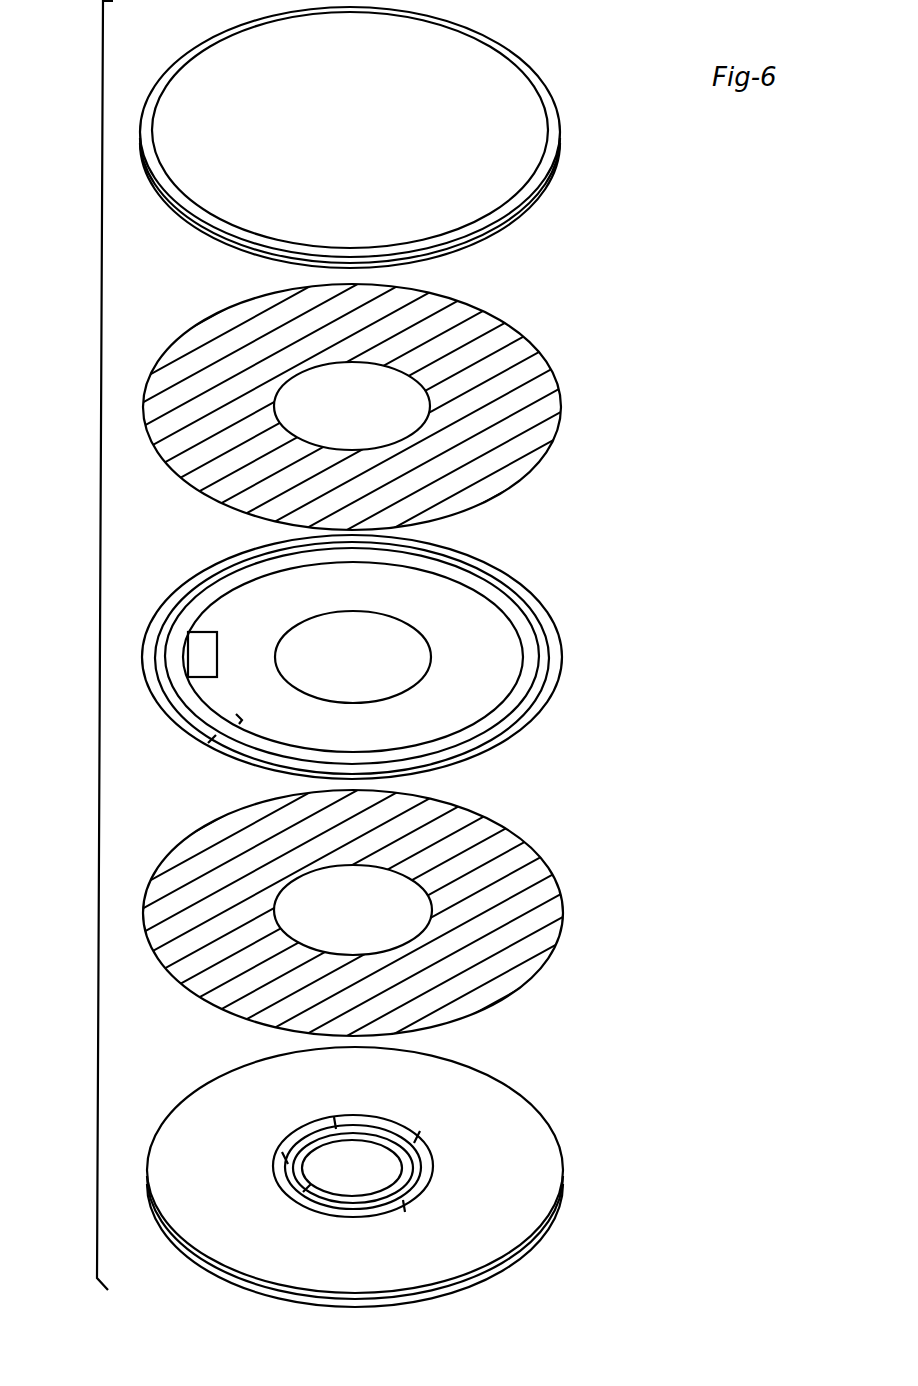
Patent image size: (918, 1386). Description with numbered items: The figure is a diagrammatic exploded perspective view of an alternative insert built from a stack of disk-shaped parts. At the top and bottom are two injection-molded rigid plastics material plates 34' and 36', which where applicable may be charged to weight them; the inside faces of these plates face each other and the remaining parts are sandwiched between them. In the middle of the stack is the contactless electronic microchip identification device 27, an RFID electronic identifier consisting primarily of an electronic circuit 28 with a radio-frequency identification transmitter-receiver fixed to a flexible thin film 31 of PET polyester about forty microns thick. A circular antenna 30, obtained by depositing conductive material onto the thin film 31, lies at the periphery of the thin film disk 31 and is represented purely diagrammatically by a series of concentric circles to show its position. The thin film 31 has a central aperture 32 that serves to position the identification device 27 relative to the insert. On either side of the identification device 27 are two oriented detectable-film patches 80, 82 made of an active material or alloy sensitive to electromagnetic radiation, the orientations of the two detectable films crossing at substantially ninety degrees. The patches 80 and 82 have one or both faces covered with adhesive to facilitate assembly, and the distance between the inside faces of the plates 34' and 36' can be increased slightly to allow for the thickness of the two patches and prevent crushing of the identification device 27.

The plate 34' is at (374, 137).
The oriented detectable-film patch 80 is at (546, 360).
The contactless electronic microchip identification device 27 is at (383, 668).
The electronic circuit 28 is at (208, 628).
The circular antenna 30 is at (242, 718).
The thin film 31 is at (360, 735).
The central aperture 32 is at (414, 631).
The oriented detectable-film patch 82 is at (567, 924).
The plate 36' is at (376, 1177).